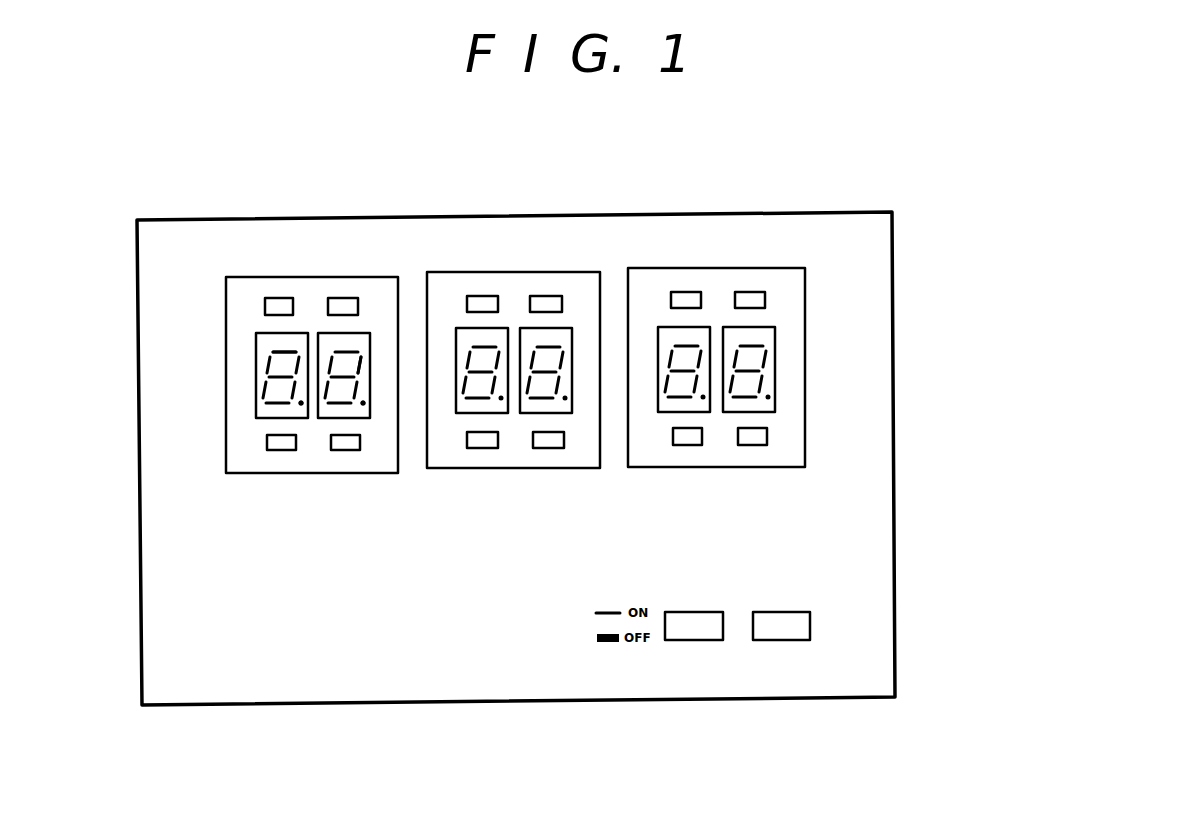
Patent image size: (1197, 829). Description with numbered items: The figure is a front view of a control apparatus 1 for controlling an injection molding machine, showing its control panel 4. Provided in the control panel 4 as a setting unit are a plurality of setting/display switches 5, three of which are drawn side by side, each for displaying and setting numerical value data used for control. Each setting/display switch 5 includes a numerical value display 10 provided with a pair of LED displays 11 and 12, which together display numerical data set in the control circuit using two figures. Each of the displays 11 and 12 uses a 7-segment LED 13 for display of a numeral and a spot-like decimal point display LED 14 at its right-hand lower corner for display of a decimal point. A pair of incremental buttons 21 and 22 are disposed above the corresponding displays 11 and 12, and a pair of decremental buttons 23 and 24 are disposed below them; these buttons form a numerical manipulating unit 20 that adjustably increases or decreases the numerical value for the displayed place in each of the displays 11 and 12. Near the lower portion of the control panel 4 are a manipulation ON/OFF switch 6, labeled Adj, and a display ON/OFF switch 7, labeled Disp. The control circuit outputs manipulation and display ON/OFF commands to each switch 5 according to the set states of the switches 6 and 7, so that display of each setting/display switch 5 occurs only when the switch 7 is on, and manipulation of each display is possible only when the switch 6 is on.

The control apparatus 1 is at (516, 498).
The control panel 4 is at (302, 692).
The setting/display switch 5 is at (243, 272).
The manipulation ON/OFF switch 6 is at (697, 633).
The display ON/OFF switch 7 is at (785, 632).
The numerical value display 10 is at (629, 393).
The LED display 11 is at (375, 339).
The LED display 12 is at (249, 408).
The 7-segment LED 13 is at (268, 361).
The decimal point display LED 14 is at (301, 403).
The numerical manipulating unit 20 is at (706, 367).
The incremental button 21 is at (345, 300).
The incremental button 22 is at (277, 300).
The decremental button 23 is at (350, 450).
The decremental button 24 is at (281, 450).